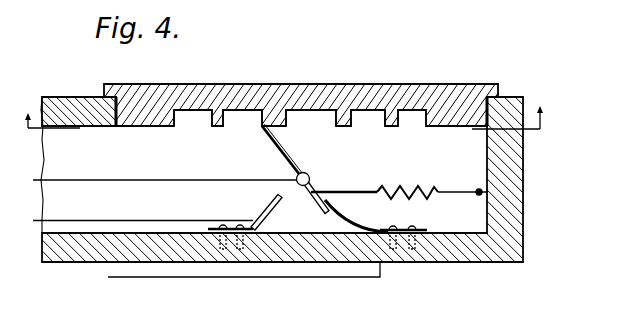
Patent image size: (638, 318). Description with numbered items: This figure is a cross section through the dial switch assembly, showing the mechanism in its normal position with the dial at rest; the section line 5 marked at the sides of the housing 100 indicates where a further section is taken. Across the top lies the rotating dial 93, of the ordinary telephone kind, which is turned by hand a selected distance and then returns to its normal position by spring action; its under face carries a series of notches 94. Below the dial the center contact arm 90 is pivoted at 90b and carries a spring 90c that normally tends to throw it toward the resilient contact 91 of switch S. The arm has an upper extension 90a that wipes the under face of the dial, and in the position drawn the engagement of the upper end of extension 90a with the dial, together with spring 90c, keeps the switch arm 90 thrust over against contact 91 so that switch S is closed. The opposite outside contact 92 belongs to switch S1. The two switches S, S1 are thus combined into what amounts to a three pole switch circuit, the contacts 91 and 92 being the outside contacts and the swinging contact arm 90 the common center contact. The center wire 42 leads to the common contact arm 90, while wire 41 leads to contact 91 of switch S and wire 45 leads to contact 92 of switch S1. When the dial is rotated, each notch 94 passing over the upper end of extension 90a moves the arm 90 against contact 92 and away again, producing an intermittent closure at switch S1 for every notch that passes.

The rotating dial 93 is at (222, 83).
The notches 94 is at (243, 118).
The center contact arm 90 is at (322, 203).
The upper extension 90a is at (275, 142).
The pivot 90b is at (310, 176).
The spring 90c is at (410, 189).
The resilient contact 91 is at (347, 218).
The contact 92 is at (268, 207).
The switch S is at (345, 205).
The switch S1 is at (258, 194).
The housing 100 is at (523, 185).
The center wire 42 is at (107, 180).
The wire 45 is at (117, 221).
The wire 41 is at (253, 277).
The section line 5- 5 is at (284, 128).